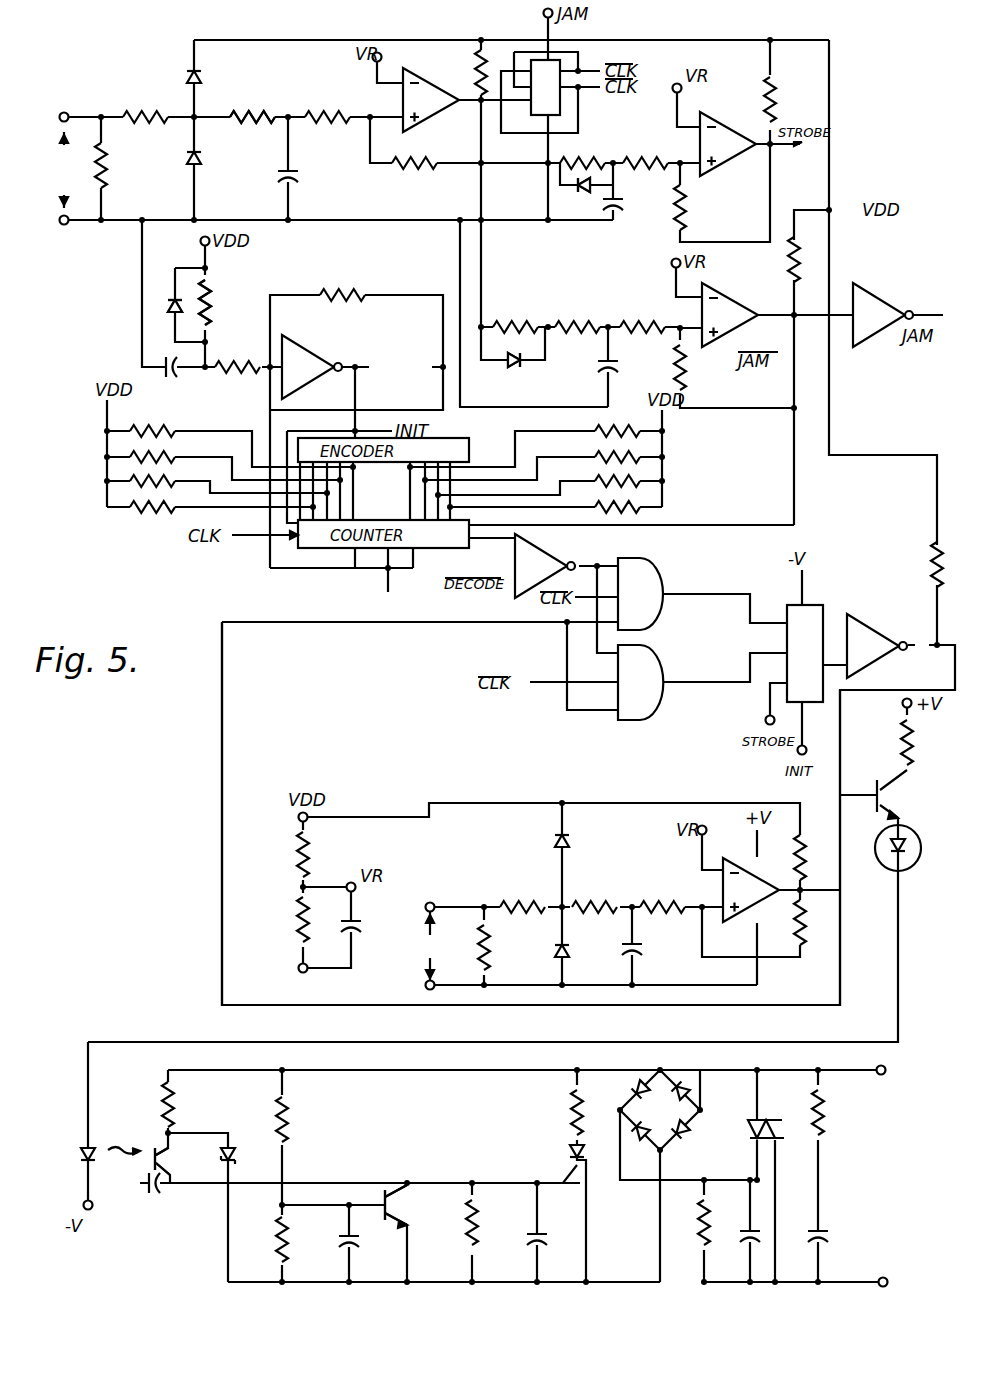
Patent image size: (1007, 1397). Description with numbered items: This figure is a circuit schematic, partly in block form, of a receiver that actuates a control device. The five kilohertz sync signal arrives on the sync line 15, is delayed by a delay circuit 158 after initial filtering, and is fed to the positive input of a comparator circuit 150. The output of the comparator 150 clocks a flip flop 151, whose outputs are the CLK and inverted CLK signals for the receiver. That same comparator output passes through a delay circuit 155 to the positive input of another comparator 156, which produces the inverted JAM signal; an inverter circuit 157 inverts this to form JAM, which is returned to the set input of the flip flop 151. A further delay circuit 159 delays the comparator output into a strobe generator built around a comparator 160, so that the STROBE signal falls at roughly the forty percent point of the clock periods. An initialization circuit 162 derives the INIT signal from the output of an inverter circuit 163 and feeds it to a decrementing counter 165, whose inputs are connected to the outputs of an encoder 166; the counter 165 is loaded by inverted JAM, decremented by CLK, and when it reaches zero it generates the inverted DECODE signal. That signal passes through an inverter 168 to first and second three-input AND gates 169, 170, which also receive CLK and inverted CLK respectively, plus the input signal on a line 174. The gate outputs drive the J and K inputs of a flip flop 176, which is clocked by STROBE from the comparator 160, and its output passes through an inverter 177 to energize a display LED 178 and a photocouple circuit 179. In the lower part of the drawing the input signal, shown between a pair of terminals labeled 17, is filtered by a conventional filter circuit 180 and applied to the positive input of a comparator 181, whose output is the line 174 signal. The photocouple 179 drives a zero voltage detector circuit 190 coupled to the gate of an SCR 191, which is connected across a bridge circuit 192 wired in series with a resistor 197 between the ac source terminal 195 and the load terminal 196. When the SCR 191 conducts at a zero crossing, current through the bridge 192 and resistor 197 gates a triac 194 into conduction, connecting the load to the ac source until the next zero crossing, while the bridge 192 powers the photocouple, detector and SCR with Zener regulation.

The sync line 15 is at (72, 181).
The input terminals 17 is at (434, 957).
The comparator circuit 150 is at (432, 124).
The flip flop 151 is at (560, 107).
The delay circuit 155 is at (582, 390).
The comparator 156 is at (730, 304).
The inverter circuit 157 is at (876, 296).
The delay circuit 158 is at (259, 189).
The delay circuit 159 is at (592, 218).
The comparator 160 is at (725, 126).
The initialization circuit 162 is at (254, 339).
The inverter circuit 163 is at (312, 351).
The decrementing counter 165 is at (372, 550).
The encoder 166 is at (454, 437).
The inverter 168 is at (550, 557).
The first AND gate 169 is at (662, 569).
The second AND gate 170 is at (615, 722).
The line 174 is at (222, 712).
The flip flop 176 is at (813, 605).
The inverter 177 is at (875, 627).
The display LED 178 is at (912, 830).
The photocouple circuit 179 is at (165, 1165).
The filter circuit 180 is at (572, 950).
The comparator 181 is at (748, 905).
The zero voltage detector circuit 190 is at (417, 1170).
The SCR 191 is at (571, 1145).
The bridge circuit 192 is at (672, 1112).
The triac 194 is at (768, 1124).
The terminal 195 is at (884, 1076).
The terminal 196 is at (883, 1288).
The resistor 197 is at (698, 1258).